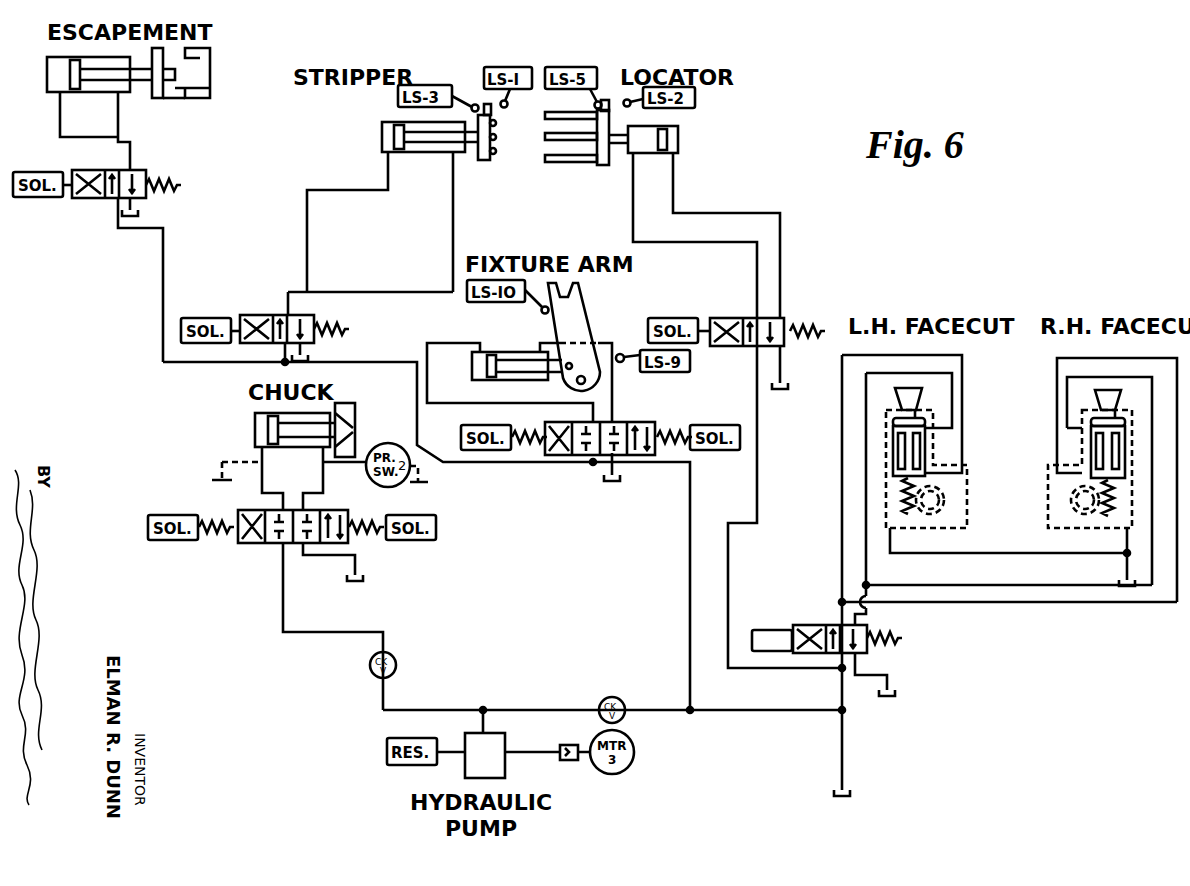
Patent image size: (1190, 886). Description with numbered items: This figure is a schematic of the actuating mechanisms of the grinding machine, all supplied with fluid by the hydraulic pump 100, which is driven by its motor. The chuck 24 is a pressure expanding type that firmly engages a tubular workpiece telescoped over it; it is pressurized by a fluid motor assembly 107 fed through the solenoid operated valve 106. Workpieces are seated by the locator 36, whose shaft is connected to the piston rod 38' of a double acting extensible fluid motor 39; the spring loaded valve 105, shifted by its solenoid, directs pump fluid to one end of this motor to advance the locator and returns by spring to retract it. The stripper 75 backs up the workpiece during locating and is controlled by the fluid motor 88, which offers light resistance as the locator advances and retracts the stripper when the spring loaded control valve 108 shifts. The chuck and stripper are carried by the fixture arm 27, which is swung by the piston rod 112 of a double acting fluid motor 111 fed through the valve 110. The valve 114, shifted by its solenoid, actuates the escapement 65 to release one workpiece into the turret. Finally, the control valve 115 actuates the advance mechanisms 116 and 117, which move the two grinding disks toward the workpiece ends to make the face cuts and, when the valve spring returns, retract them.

The escapement 65 is at (216, 60).
The stripper 75 is at (488, 110).
The fluid motor 88 is at (390, 122).
The locator 36 is at (578, 172).
The piston rod 38' is at (609, 166).
The double acting extensible fluid motor 39 is at (682, 128).
The spring loaded valve 105 is at (745, 347).
The spring loaded control valve 108 is at (276, 315).
The valve 114 is at (108, 200).
The fixture arm 27 is at (580, 308).
The double acting fluid motor 111 is at (503, 351).
The piston rod 112 is at (556, 372).
The fluid motor assembly 107 is at (256, 418).
The chuck 24 is at (350, 403).
The valve 106 is at (272, 545).
The valve 110 is at (575, 455).
The advance mechanism 116 is at (927, 445).
The advance mechanism 117 is at (1088, 445).
The control valve 115 is at (815, 623).
The hydraulic pump 100 is at (506, 765).